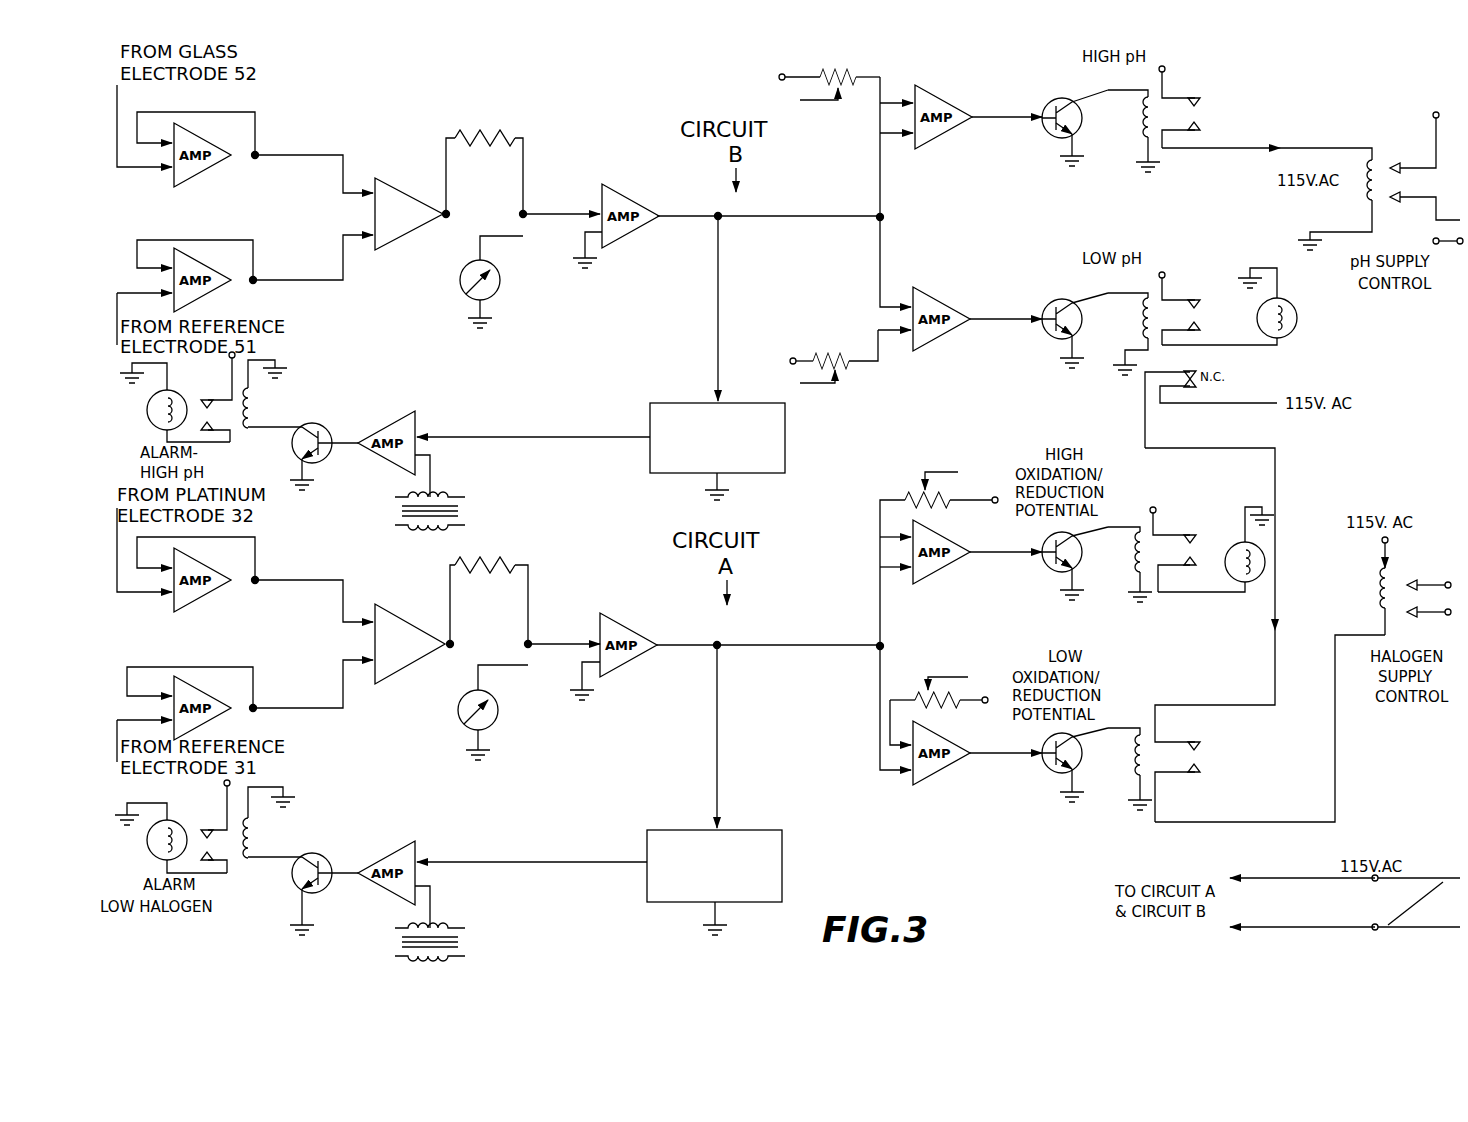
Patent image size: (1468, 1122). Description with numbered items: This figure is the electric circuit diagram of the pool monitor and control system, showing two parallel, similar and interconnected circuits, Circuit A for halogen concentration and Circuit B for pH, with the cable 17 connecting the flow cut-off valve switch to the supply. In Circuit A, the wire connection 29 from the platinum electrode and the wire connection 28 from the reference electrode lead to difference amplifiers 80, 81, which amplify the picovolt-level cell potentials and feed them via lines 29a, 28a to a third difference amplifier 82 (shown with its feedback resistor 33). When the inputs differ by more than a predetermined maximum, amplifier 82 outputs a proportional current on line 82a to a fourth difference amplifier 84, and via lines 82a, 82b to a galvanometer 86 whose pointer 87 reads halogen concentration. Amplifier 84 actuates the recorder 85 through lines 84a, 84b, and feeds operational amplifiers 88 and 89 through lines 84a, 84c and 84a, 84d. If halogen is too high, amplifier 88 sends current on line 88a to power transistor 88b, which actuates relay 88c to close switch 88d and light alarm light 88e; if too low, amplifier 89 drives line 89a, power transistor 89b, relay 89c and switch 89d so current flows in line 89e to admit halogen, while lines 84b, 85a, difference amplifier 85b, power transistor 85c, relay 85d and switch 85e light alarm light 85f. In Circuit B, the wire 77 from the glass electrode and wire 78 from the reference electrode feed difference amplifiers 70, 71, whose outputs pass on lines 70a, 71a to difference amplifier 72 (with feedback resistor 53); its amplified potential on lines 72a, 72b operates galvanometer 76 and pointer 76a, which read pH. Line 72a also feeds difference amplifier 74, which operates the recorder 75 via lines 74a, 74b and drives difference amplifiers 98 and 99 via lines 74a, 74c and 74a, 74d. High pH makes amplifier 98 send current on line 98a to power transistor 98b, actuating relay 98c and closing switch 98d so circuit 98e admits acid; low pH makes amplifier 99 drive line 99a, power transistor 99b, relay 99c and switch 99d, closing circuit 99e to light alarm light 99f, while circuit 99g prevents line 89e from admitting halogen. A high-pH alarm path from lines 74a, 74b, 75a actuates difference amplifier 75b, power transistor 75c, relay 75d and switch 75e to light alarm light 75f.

The cable 17 is at (1388, 925).
The wire connection 28 is at (125, 718).
The line 28a is at (328, 712).
The wire connection 29 is at (123, 598).
The line 29a is at (330, 580).
The feedback resistor 33 is at (500, 560).
The feedback resistor 53 is at (497, 130).
The difference amplifier 70 is at (205, 176).
The line 70a is at (290, 158).
The difference amplifier 71 is at (207, 272).
The line 71a is at (287, 280).
The difference amplifier 72 is at (400, 184).
The line 72a is at (556, 208).
The line 72b is at (496, 248).
The difference amplifier 74 is at (628, 192).
The line 74a is at (672, 225).
The line 74b is at (712, 340).
The line 74c is at (882, 196).
The line 74d is at (878, 276).
The recorder 75 is at (787, 442).
The line 75a is at (548, 424).
The difference amplifier 75b is at (388, 420).
The power transistor 75c is at (322, 462).
The relay 75d is at (254, 406).
The switch 75e is at (200, 395).
The alarm light 75f is at (147, 416).
The galvanometer 76 is at (498, 292).
The pointer 76a is at (452, 300).
The wire 77 is at (128, 170).
The wire 78 is at (127, 287).
The difference amplifier 80 is at (207, 601).
The difference amplifier 81 is at (207, 728).
The difference amplifier 82 is at (402, 612).
The line 82a is at (556, 636).
The line 82b is at (500, 678).
The difference amplifier 84 is at (626, 620).
The line 84a is at (672, 655).
The line 84b is at (722, 770).
The line 84c is at (880, 612).
The line 84d is at (878, 700).
The recorder 85 is at (784, 875).
The line 85a is at (548, 858).
The difference amplifier 85b is at (395, 845).
The power transistor 85c is at (322, 892).
The relay 85d is at (256, 835).
The switch 85e is at (230, 845).
The alarm light 85f is at (147, 846).
The galvanometer 86 is at (496, 722).
The pointer 87 is at (455, 728).
The operational amplifier 88 is at (947, 541).
The line 88a is at (985, 558).
The power transistor 88b is at (1050, 572).
The relay 88c is at (1132, 558).
The switch 88d is at (1172, 530).
The alarm light 88e is at (1262, 585).
The operational amplifier 89 is at (925, 785).
The line 89a is at (1005, 760).
The power transistor 89b is at (1048, 775).
The relay 89c is at (1132, 770).
The switch 89d is at (1200, 755).
The line 89e is at (1240, 822).
The difference amplifier 98 is at (948, 106).
The line 98a is at (1002, 124).
The power transistor 98b is at (1056, 98).
The relay 98c is at (1140, 142).
The switch 98d is at (1200, 113).
The circuit 98e is at (1236, 152).
The difference amplifier 99 is at (945, 306).
The line 99a is at (1000, 328).
The power transistor 99b is at (1056, 300).
The relay 99c is at (1140, 324).
The switch 99d is at (1210, 290).
The circuit 99e is at (1255, 350).
The alarm light 99f is at (1297, 318).
The circuit 99g is at (1280, 458).